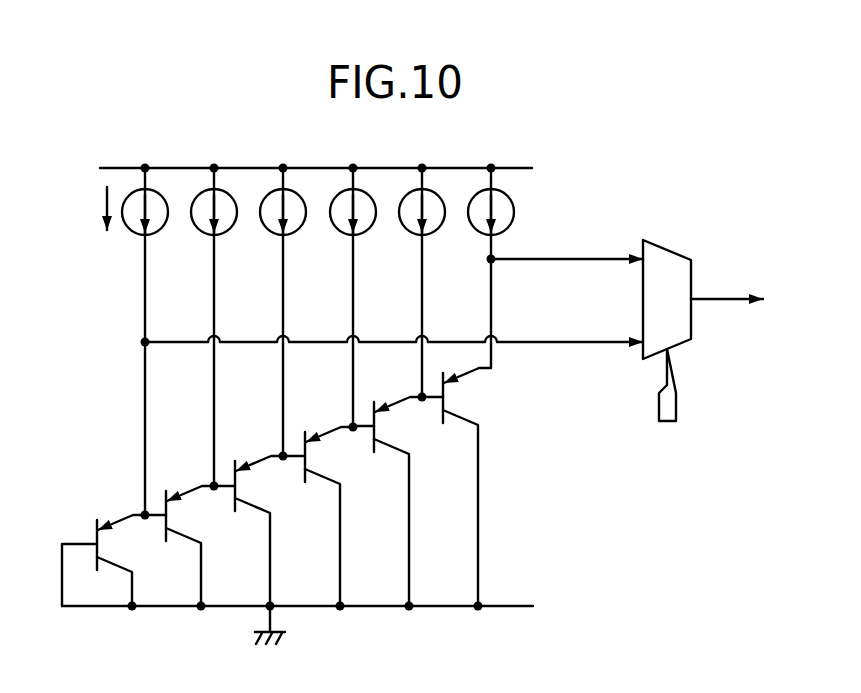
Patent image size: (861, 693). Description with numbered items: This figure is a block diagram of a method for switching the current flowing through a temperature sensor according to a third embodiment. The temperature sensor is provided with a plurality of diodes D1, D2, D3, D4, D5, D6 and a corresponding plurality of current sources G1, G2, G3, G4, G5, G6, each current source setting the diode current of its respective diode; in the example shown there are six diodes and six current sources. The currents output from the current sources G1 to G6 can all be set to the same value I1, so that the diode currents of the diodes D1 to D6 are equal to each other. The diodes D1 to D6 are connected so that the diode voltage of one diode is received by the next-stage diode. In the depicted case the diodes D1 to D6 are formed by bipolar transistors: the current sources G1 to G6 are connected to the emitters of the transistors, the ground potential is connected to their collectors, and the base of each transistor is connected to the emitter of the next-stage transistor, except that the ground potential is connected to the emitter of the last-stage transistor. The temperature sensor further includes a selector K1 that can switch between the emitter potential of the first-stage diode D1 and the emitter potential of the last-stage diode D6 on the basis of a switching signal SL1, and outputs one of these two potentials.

The current I1 is at (92, 208).
The current source G1 is at (481, 237).
The current source G2 is at (412, 237).
The current source G3 is at (343, 237).
The current source G4 is at (273, 237).
The current source G5 is at (204, 237).
The current source G6 is at (135, 237).
The diode D1 is at (440, 415).
The diode D2 is at (371, 444).
The diode D3 is at (302, 474).
The diode D4 is at (232, 503).
The diode D5 is at (163, 533).
The diode D6 is at (93, 522).
The selector K1 is at (692, 275).
The switching signal SL1 is at (667, 399).